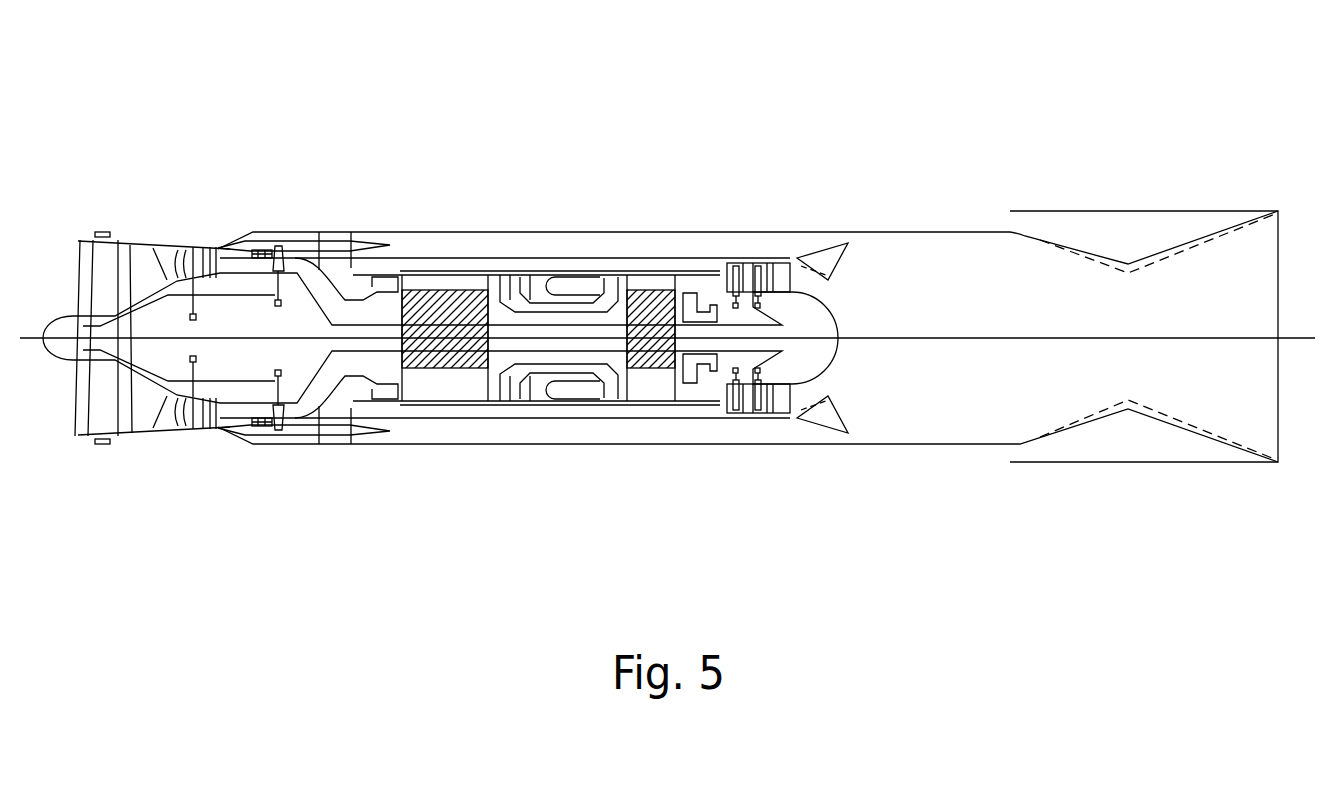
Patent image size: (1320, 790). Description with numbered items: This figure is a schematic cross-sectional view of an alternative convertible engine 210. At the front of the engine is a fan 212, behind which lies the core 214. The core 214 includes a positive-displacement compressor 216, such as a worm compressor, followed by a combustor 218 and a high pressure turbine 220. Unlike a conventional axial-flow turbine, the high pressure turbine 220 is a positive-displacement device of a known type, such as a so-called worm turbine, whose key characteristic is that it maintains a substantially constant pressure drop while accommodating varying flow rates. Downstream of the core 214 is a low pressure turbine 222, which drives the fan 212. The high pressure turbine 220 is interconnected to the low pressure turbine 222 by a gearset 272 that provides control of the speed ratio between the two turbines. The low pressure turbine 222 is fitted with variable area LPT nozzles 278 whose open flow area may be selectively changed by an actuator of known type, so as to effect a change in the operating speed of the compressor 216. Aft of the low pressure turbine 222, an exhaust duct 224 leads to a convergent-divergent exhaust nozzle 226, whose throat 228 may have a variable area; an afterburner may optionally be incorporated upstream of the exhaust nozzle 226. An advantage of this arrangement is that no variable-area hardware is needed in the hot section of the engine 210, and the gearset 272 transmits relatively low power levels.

The convertible engine 210 is at (610, 100).
The fan 212 is at (235, 218).
The core 214 is at (549, 258).
The positive-displacement compressor 216 is at (420, 372).
The combustor 218 is at (570, 395).
The high pressure turbine 220 is at (636, 372).
The low pressure turbine 222 is at (783, 263).
The exhaust duct 224 is at (965, 294).
The convergent-divergent exhaust nozzle 226 is at (1136, 178).
The throat 228 is at (1127, 409).
The gearset 272 is at (727, 263).
The variable area LPT nozzles 278 is at (745, 405).